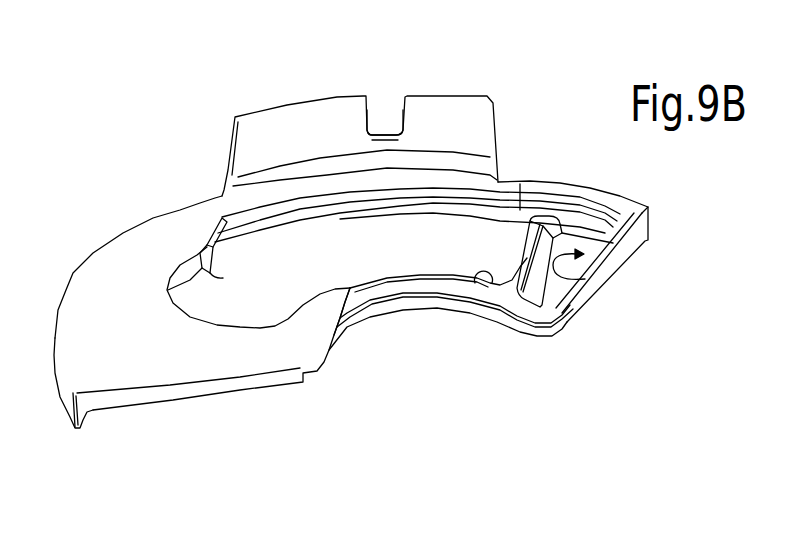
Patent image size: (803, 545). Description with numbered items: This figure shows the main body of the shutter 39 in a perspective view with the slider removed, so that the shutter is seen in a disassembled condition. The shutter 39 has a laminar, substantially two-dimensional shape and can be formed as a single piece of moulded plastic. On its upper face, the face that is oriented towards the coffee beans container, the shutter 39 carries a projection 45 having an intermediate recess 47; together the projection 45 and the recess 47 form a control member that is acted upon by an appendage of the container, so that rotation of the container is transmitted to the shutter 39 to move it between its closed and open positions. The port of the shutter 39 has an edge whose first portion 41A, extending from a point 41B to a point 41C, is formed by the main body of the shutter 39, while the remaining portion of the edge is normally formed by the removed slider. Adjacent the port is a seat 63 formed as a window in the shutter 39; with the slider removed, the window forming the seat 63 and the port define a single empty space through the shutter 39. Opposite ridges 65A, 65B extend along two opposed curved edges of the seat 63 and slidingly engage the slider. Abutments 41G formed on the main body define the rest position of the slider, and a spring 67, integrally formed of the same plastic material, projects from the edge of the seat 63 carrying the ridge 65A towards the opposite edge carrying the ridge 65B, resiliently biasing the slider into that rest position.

The shutter 39 is at (234, 400).
The projection 45 is at (310, 102).
The intermediate recess 47 is at (385, 128).
The abutments 41G is at (213, 243).
The point 41B is at (210, 272).
The first portion of the edge 41A is at (207, 314).
The point 41C is at (350, 287).
The spring 67 is at (530, 243).
The ridge 65B is at (520, 210).
The ridge 65A is at (487, 287).
The seat 63 is at (585, 279).